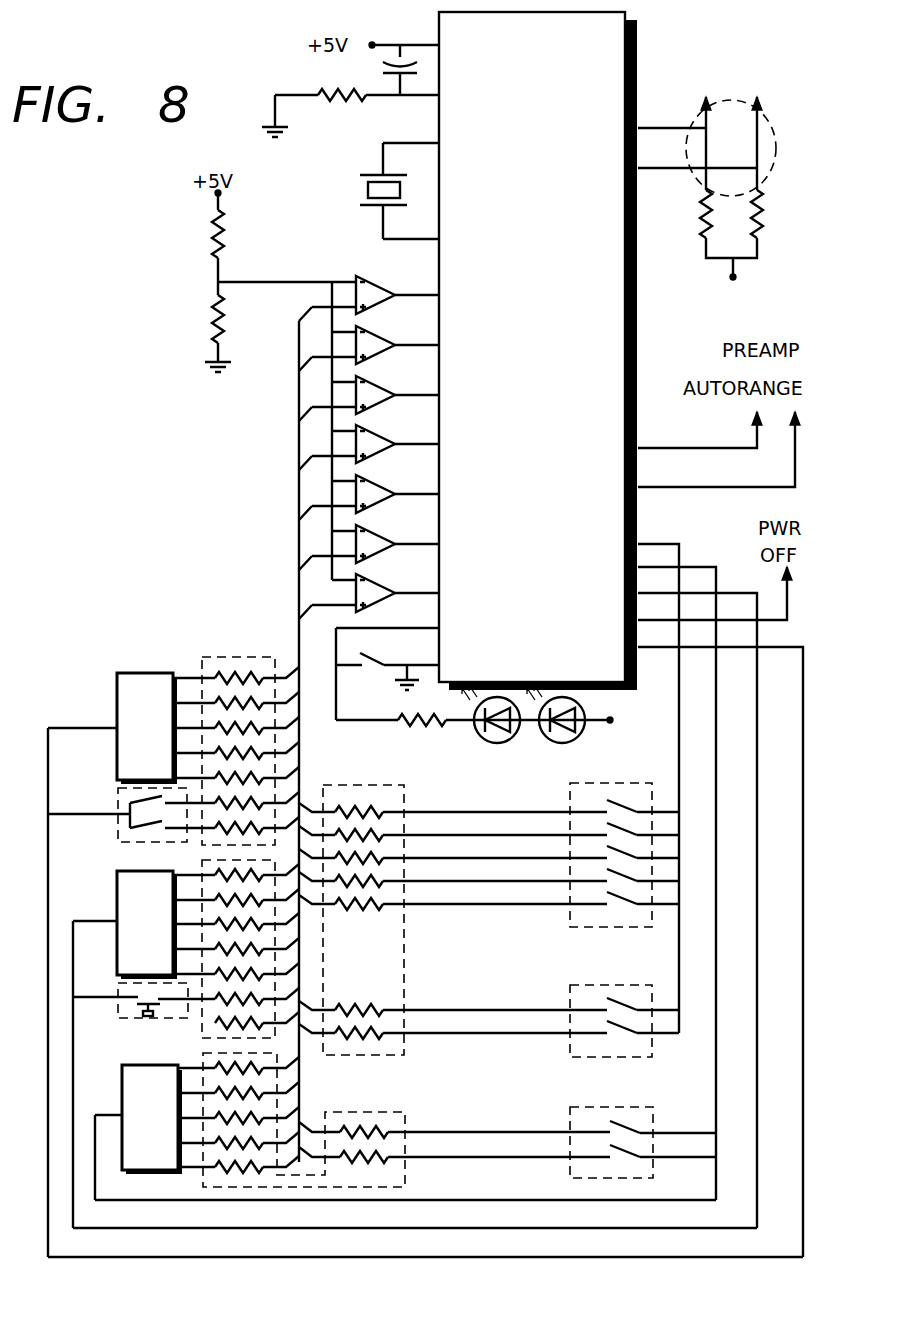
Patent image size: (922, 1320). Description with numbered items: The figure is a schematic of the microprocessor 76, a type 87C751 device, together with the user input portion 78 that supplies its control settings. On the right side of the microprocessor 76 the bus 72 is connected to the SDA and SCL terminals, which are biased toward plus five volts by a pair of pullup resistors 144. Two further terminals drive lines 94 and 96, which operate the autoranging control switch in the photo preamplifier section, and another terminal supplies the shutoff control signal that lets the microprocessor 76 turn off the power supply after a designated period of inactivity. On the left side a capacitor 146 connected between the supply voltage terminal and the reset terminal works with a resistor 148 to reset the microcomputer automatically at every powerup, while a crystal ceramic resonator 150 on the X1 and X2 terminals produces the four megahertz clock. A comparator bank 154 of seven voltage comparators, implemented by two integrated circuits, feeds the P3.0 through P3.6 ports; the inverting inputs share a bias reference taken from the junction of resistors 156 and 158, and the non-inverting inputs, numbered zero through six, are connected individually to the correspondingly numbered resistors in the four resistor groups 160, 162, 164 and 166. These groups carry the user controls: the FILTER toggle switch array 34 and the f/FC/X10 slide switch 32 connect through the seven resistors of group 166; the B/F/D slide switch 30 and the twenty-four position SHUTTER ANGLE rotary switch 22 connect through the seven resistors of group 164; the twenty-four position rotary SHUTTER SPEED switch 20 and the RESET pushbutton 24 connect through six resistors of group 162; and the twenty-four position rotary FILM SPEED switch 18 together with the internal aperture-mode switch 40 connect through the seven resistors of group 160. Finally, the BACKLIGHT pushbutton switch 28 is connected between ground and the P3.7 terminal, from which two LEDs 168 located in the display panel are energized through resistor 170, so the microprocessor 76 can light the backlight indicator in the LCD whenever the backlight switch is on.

The microprocessor 76 is at (640, 358).
The capacitor 146 is at (378, 78).
The resistor 148 is at (323, 104).
The crystal ceramic resonator 150 is at (372, 175).
The comparator bank 154 is at (377, 273).
The resistor 156 is at (212, 246).
The resistor 158 is at (214, 337).
The user input portion 78 is at (132, 548).
The BACKLIGHT pushbutton switch 28 is at (396, 670).
The resistor 170 is at (422, 730).
The LEDs 168 is at (560, 744).
The bus 72 is at (766, 168).
The pullup resistors 144 is at (752, 228).
The line 94 is at (735, 445).
The line 96 is at (738, 488).
The FILM SPEED switch 18 is at (148, 673).
The resistor group 160 is at (205, 657).
The f/1/6f switch 40 is at (128, 803).
The SHUTTER SPEED switch 20 is at (148, 871).
The resistor group 162 is at (202, 1036).
The RESET pushbutton 24 is at (127, 1000).
The SHUTTER ANGLE rotary switch 22 is at (140, 1065).
The resistor group 164 is at (408, 1117).
The B/F/D slide switch 30 is at (566, 1172).
The resistor group 166 is at (405, 985).
The FILTER toggle switch array 34 is at (568, 920).
The f/FC/X10 slide switch 32 is at (568, 1050).